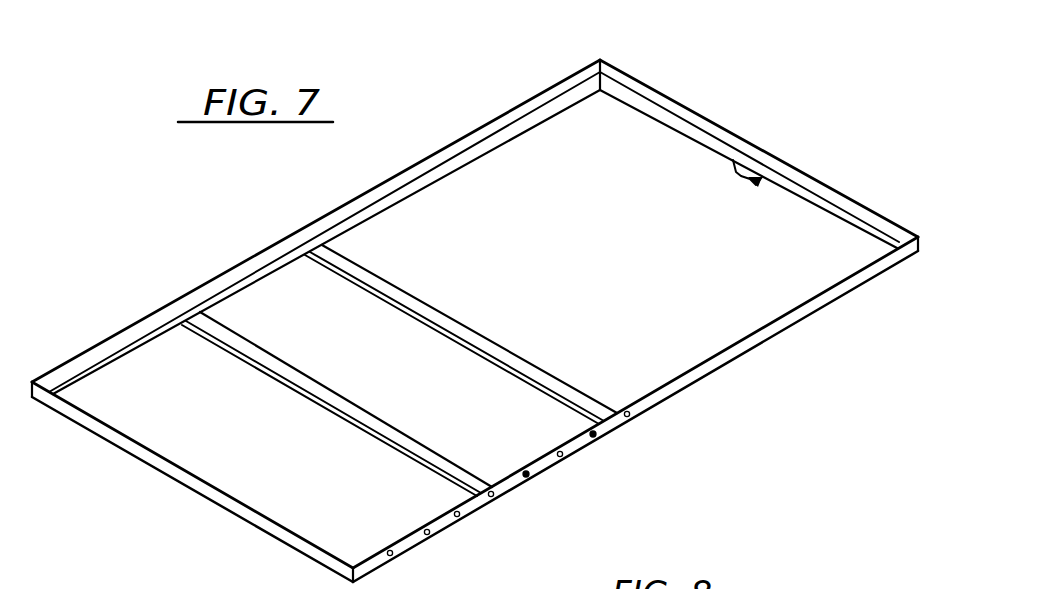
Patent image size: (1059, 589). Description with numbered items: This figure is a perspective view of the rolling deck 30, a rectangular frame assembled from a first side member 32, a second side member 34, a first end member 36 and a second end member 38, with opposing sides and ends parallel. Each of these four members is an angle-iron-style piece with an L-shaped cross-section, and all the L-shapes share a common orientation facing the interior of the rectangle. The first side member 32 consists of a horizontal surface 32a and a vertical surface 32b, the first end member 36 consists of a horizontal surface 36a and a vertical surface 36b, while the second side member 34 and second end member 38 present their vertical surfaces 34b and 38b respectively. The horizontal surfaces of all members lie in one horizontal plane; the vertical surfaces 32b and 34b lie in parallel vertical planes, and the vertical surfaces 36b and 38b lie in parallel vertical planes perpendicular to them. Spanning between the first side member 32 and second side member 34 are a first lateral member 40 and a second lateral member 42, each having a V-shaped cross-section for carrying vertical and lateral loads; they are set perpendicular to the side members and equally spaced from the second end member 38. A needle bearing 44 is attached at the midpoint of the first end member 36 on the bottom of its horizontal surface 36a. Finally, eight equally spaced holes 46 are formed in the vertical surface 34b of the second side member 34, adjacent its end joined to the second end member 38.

The rolling deck 30 is at (438, 88).
The first side member 32 is at (506, 98).
The horizontal surface 32a is at (406, 197).
The vertical surface 32b is at (318, 210).
The second side member 34 is at (722, 377).
The vertical surface 34b is at (829, 305).
The first end member 36 is at (745, 128).
The horizontal surface 36a is at (647, 117).
The vertical surface 36b is at (812, 176).
The second end member 38 is at (160, 481).
The vertical surface 38b is at (262, 531).
The first lateral member 40 is at (483, 330).
The second lateral member 42 is at (372, 420).
The needle bearing 44 is at (743, 177).
The holes 46 is at (393, 559).